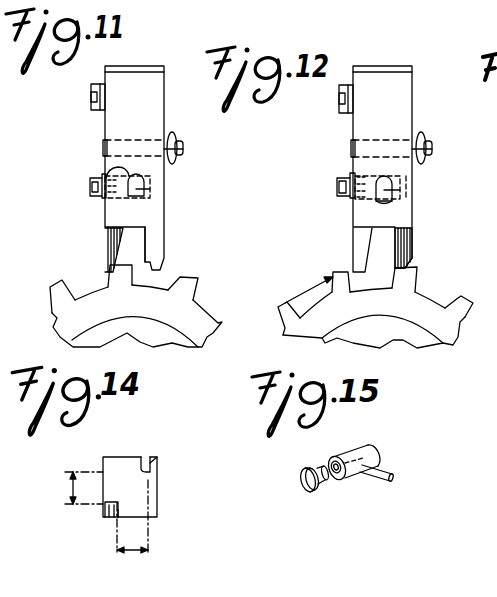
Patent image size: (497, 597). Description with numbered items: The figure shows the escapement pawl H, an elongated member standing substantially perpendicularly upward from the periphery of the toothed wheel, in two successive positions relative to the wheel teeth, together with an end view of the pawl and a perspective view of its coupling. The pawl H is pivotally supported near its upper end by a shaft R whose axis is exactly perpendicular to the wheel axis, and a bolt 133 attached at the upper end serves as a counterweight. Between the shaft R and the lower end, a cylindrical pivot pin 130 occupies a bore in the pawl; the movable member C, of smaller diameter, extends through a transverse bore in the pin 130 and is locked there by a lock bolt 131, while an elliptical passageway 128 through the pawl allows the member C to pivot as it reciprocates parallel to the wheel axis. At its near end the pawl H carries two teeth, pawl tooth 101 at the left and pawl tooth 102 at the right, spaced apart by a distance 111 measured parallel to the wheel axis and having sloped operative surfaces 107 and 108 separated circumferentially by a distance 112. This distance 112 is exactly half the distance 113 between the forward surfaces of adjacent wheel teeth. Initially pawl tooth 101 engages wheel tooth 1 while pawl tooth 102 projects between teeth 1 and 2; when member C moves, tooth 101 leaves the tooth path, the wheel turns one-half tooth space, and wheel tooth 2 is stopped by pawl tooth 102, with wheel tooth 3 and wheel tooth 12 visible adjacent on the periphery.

In FIG. 11, the pawl H is at (150, 208).
In FIG. 12, the pawl H is at (395, 120).
In FIG. 11, the shaft R is at (183, 151).
In FIG. 12, the shaft R is at (432, 150).
In FIG. 11, the movable member C is at (130, 197).
In FIG. 12, the movable member C is at (400, 190).
In FIG. 15, the movable member C is at (395, 475).
In FIG. 11, the elliptical passageway 128 is at (104, 169).
In FIG. 12, the elliptical passageway 128 is at (393, 203).
In FIG. 11, the cylindrical pivot pin 130 is at (150, 183).
In FIG. 12, the cylindrical pivot pin 130 is at (412, 172).
In FIG. 15, the cylindrical pivot pin 130 is at (363, 448).
In FIG. 11, the lock bolt 131 is at (90, 187).
In FIG. 12, the lock bolt 131 is at (337, 192).
In FIG. 15, the lock bolt 131 is at (317, 492).
In FIG. 12, the bolt 133 is at (338, 102).
In FIG. 11, the pawl tooth 101 is at (104, 258).
In FIG. 12, the pawl tooth 101 is at (358, 258).
In FIG. 14, the pawl tooth 101 is at (110, 523).
In FIG. 11, the pawl tooth 102 is at (160, 264).
In FIG. 12, the pawl tooth 102 is at (403, 245).
In FIG. 14, the pawl tooth 102 is at (145, 460).
In FIG. 12, the sloped surface 107 is at (367, 247).
In FIG. 14, the sloped surface 107 is at (120, 507).
In FIG. 12, the sloped surface 108 is at (408, 258).
In FIG. 14, the sloped surface 108 is at (160, 467).
In FIG. 14, the spacing between pawl teeth 111 is at (68, 487).
In FIG. 14, the circumferential spacing between pawl tooth surfaces 112 is at (117, 562).
In FIG. 12, the circumferential spacing between wheel teeth 113 is at (315, 283).
In FIG. 11, the wheel tooth 1 is at (120, 276).
In FIG. 12, the wheel tooth 1 is at (341, 282).
In FIG. 11, the wheel tooth 2 is at (183, 288).
In FIG. 12, the wheel tooth 2 is at (404, 279).
In FIG. 12, the wheel tooth 3 is at (459, 307).
In FIG. 11, the wheel tooth 12 is at (62, 296).
In FIG. 12, the wheel tooth 12 is at (289, 318).